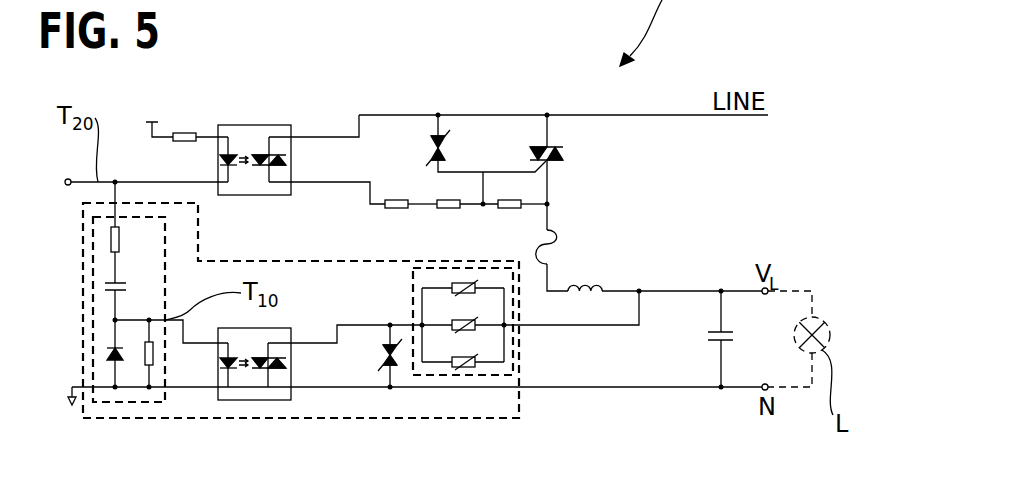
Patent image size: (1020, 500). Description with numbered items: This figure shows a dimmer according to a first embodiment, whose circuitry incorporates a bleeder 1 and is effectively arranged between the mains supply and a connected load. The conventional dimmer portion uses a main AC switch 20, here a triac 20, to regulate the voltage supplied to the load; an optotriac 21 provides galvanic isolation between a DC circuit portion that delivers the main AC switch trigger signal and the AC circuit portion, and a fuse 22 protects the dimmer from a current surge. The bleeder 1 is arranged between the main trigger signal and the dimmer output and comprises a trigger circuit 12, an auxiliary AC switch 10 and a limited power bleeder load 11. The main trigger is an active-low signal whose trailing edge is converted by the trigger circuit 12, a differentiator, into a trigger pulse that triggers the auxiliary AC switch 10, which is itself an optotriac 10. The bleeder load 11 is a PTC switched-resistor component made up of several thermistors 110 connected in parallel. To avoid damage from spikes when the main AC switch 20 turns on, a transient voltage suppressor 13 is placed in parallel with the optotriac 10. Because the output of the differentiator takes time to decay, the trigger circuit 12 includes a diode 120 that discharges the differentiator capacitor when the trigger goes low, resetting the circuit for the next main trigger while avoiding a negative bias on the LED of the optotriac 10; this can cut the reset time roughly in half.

The bleeder 1 is at (428, 418).
The auxiliary AC switch 10 is at (288, 328).
The bleeder load 11 is at (483, 375).
The thermistor 110 is at (455, 325).
The trigger circuit 12 is at (128, 402).
The diode 120 is at (107, 354).
The transient voltage suppressor 13 is at (383, 368).
The main AC switch 20 is at (553, 162).
The optotriac 21 is at (261, 125).
The fuse 22 is at (558, 262).